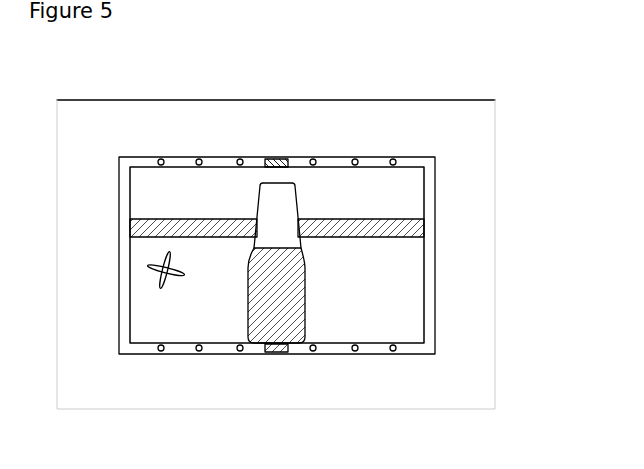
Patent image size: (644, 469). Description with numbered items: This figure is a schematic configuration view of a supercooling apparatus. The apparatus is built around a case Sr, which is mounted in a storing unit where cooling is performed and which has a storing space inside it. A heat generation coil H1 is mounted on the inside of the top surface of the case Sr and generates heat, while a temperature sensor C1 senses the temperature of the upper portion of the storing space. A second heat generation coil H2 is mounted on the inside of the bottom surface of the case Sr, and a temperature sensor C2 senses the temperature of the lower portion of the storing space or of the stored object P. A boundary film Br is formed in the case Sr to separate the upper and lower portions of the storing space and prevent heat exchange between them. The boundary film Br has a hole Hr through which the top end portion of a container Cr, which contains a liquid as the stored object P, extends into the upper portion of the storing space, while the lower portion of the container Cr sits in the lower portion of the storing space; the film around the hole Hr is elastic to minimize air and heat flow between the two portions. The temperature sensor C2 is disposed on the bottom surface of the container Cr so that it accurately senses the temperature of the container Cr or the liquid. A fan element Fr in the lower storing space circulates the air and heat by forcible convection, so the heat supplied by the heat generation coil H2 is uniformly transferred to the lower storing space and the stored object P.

The heat generation coil H1 is at (161, 158).
The temperature sensor C1 is at (275, 158).
The hole Hr is at (258, 219).
The boundary film Br is at (153, 235).
The fan element Fr is at (147, 267).
The stored object P is at (191, 319).
The case Sr is at (435, 240).
The heat generation coil H2 is at (161, 352).
The container Cr is at (248, 307).
The temperature sensor C2 is at (282, 352).